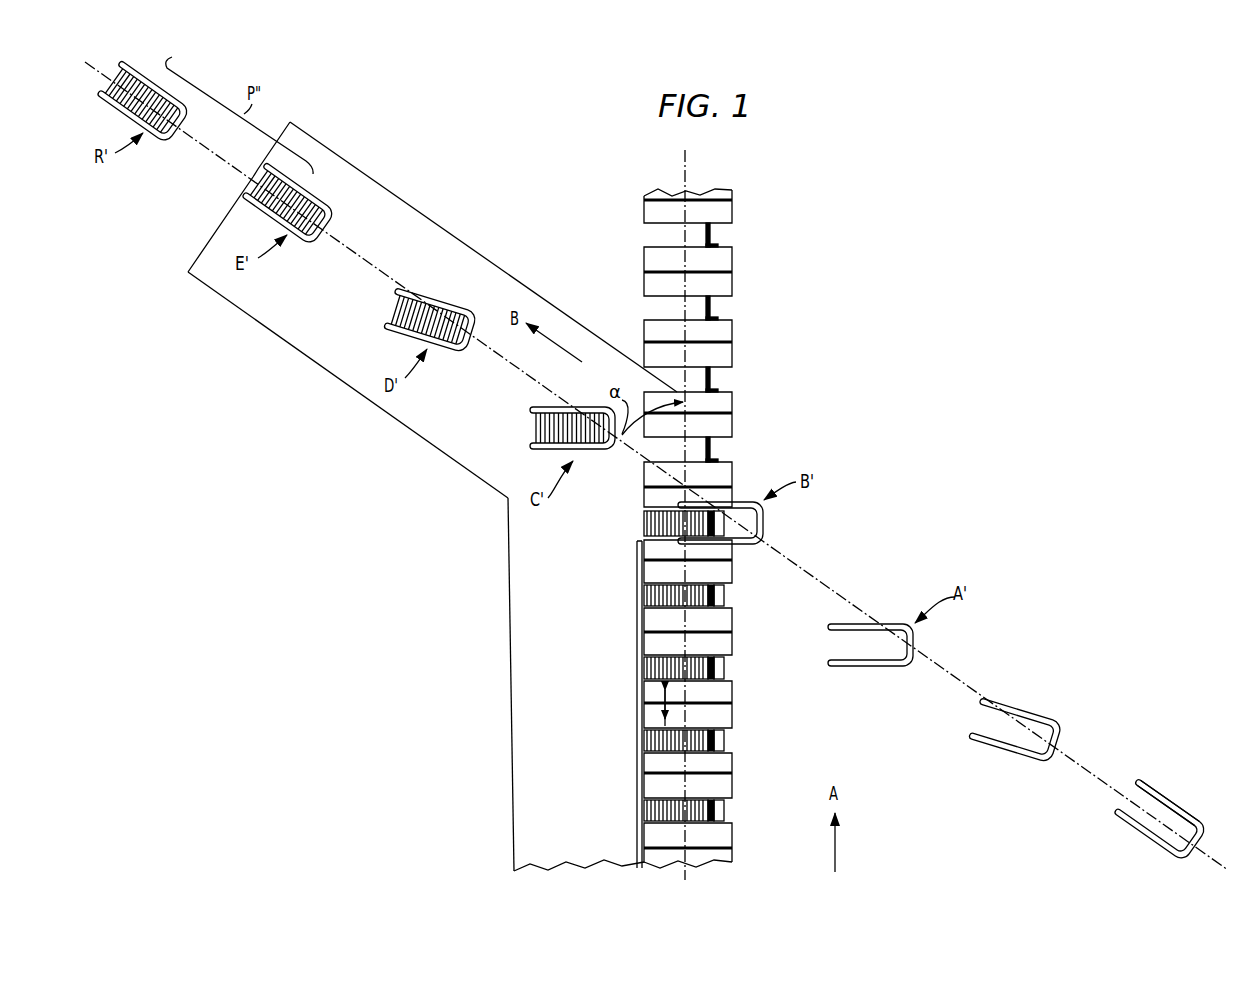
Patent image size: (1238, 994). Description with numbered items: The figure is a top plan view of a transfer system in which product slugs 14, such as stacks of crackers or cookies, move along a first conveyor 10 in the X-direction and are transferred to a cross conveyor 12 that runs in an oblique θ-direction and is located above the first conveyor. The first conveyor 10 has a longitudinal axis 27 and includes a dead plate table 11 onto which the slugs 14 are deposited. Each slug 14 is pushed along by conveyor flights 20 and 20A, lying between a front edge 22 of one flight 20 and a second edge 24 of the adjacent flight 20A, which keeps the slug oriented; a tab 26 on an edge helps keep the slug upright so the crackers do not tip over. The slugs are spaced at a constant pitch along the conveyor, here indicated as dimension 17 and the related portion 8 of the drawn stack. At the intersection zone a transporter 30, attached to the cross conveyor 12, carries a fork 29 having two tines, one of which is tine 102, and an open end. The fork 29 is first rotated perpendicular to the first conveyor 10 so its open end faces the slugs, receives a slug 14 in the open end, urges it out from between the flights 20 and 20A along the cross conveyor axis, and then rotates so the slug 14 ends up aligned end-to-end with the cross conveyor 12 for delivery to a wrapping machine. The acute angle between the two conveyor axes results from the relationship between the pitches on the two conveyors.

The clip row 8 is at (702, 742).
The first conveyor 10 is at (791, 347).
The dead plate table 11 is at (527, 842).
The cross conveyor 12 is at (396, 176).
The slugs 14 is at (533, 428).
The pitch 17 is at (662, 697).
The conveyor flight 20 is at (655, 760).
The conveyor flight 20A is at (652, 714).
The front edge 22 is at (733, 247).
The second edge 24 is at (733, 224).
The tab 26 is at (712, 235).
The longitudinal axis 27 is at (682, 168).
The fork 29 is at (1152, 774).
The transporter 30 is at (1035, 701).
The tine 102 is at (1162, 797).